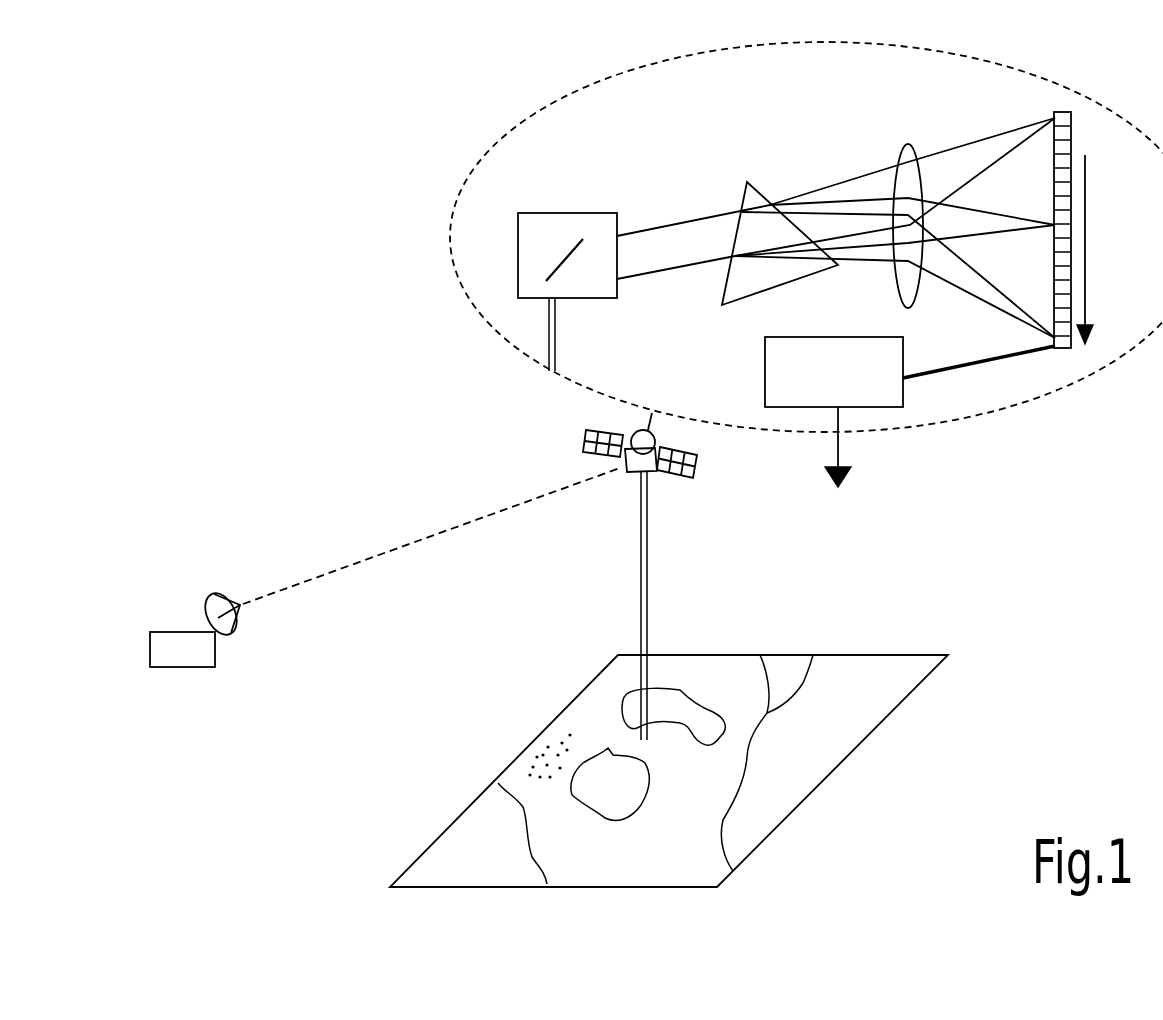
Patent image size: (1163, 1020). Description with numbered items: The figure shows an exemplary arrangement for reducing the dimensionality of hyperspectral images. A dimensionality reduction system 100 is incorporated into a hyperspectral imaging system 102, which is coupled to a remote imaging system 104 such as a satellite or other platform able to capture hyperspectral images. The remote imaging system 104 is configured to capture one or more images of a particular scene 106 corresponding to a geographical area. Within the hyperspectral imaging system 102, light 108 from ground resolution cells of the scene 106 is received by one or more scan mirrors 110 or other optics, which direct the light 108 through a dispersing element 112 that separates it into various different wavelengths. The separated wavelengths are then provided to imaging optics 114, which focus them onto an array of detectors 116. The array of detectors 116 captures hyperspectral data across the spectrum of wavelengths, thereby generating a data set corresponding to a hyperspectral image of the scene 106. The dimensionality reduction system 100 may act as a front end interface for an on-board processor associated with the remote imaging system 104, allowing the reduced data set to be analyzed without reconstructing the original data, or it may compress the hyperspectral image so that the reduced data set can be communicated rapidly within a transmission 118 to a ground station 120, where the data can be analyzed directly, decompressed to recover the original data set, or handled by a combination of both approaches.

The dimensionality reduction system 100 is at (765, 366).
The hyperspectral imaging system 102 is at (1008, 406).
The remote imaging system 104 is at (695, 467).
The scene 106 is at (508, 768).
The light 108 is at (556, 337).
The scan mirrors 110 is at (571, 213).
The dispersing element 112 is at (745, 206).
The imaging optics 114 is at (904, 172).
The array of detectors 116 is at (1061, 112).
The transmission 118 is at (410, 543).
The ground station 120 is at (173, 632).